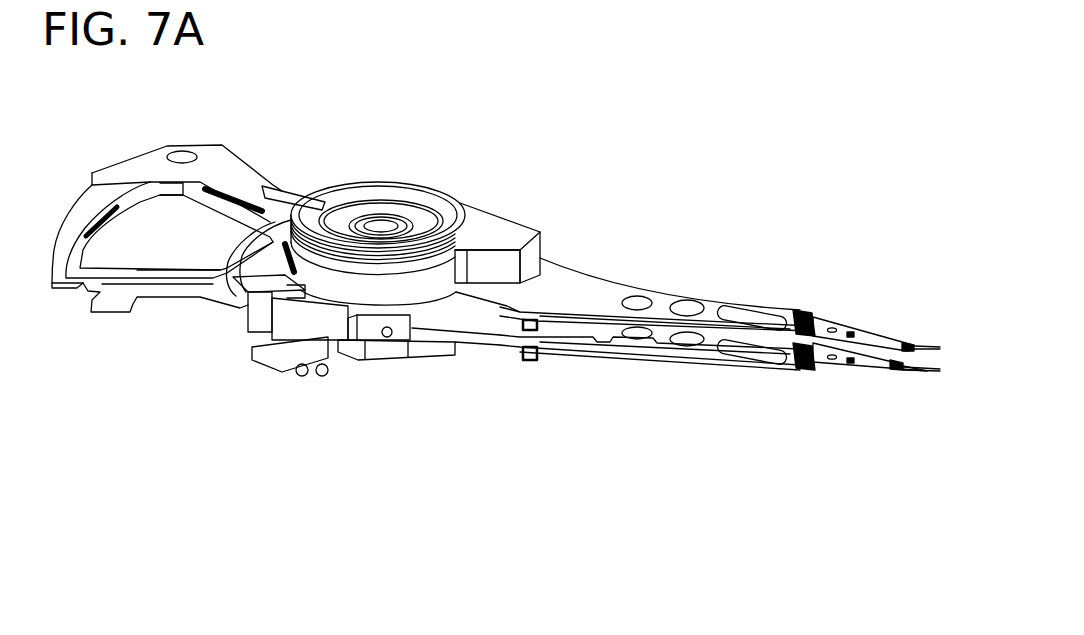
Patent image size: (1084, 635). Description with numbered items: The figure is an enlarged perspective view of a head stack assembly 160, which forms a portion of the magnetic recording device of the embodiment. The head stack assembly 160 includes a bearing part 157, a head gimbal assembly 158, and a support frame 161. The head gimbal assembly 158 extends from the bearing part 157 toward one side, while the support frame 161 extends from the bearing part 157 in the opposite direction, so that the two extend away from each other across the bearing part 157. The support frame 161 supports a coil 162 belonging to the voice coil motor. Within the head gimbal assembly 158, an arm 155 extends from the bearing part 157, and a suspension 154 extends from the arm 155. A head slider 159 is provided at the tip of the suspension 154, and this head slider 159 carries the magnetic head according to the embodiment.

The suspension 154 is at (870, 337).
The arm 155 is at (713, 308).
The bearing part 157 is at (399, 158).
The head gimbal assembly 158 is at (641, 262).
The head slider 159 is at (907, 345).
The head stack assembly 160 is at (599, 186).
The support frame 161 is at (217, 165).
The coil 162 is at (137, 270).